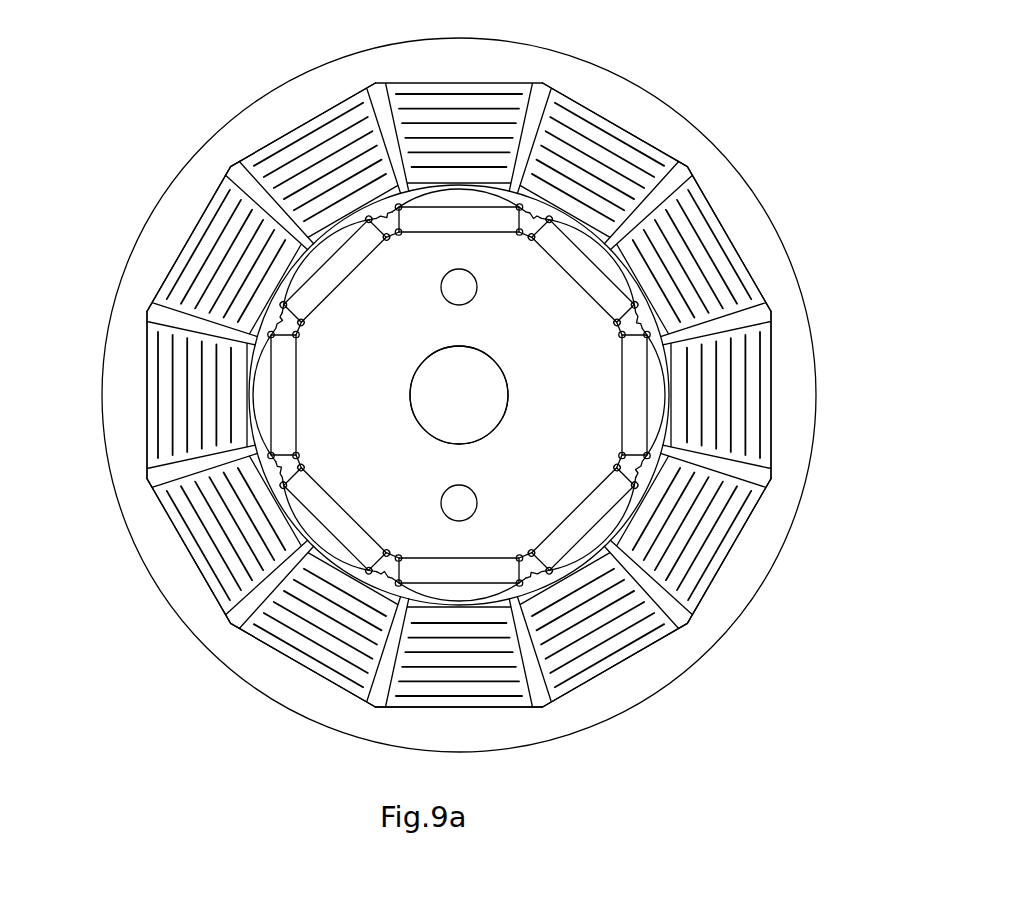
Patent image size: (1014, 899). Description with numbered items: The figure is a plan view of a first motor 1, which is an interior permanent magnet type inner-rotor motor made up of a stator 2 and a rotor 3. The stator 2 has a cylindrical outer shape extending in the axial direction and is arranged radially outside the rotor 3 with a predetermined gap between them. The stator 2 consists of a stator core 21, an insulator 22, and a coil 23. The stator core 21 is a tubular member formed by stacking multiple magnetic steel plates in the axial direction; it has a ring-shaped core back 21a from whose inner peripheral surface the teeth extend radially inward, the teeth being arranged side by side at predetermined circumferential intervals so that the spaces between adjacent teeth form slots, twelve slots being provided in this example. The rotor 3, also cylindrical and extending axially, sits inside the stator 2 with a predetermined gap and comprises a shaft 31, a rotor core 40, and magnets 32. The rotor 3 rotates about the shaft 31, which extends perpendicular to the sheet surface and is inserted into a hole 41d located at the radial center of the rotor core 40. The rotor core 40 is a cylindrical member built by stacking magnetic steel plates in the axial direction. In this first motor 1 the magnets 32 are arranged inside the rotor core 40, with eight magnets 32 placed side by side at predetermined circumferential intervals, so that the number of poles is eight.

The motor 1 is at (170, 142).
The stator 2 is at (394, 360).
The rotor 3 is at (192, 288).
The stator core 21 is at (459, 360).
The core back 21a is at (233, 145).
The insulator 22 is at (237, 379).
The coil 23 is at (181, 361).
The shaft 31 is at (433, 395).
The magnet 32 is at (353, 537).
The rotor core 40 is at (383, 482).
The hole 41d is at (427, 362).